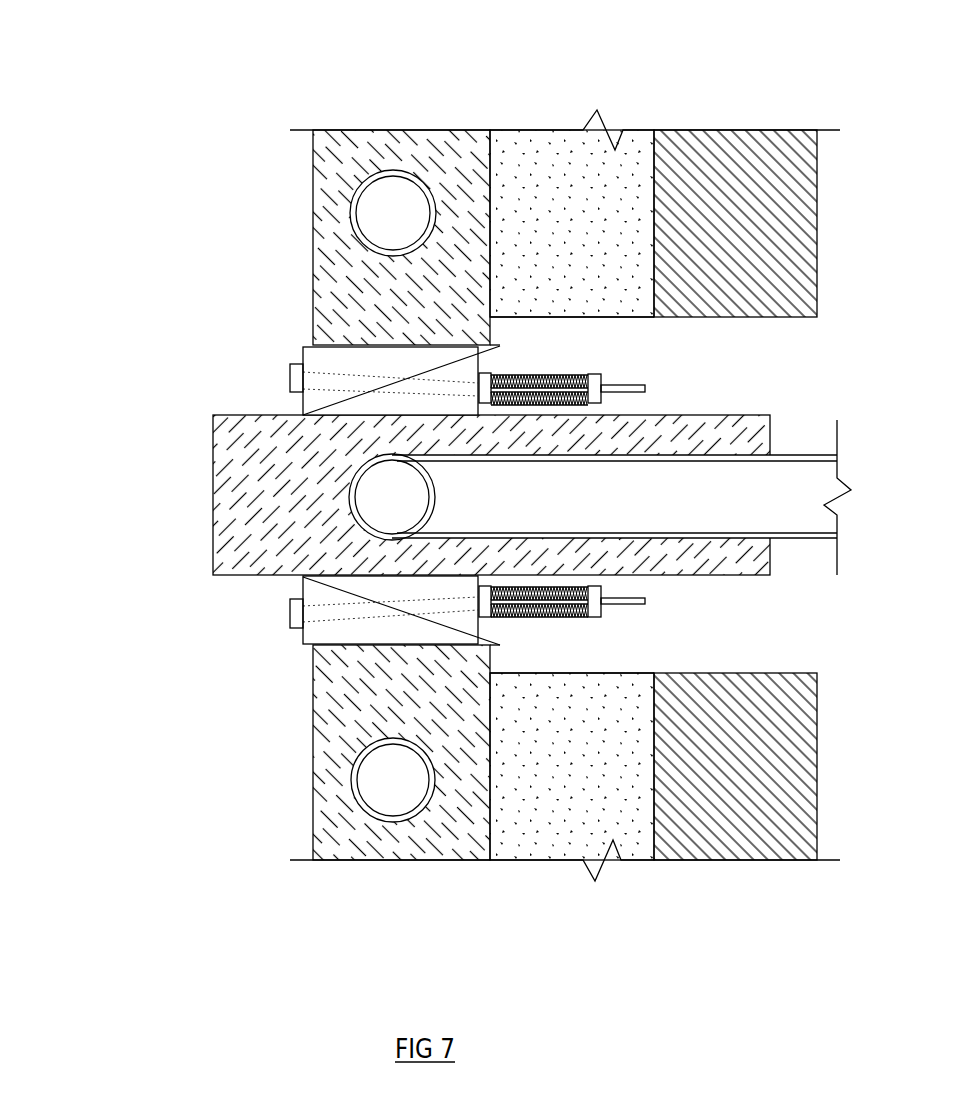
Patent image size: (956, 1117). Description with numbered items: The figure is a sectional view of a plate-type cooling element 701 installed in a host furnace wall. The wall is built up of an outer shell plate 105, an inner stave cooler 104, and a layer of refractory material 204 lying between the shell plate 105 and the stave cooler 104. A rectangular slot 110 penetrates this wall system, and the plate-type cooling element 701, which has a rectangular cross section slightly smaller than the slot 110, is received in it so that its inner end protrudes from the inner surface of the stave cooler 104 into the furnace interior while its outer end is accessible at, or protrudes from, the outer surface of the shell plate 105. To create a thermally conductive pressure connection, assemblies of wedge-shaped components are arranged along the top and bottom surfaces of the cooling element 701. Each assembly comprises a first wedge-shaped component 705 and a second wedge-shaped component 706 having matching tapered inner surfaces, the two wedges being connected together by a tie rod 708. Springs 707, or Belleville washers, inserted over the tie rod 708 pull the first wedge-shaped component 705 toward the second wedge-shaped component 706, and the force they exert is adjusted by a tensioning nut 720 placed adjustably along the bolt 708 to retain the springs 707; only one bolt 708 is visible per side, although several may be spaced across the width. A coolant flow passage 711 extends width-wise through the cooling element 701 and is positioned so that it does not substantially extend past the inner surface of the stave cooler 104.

The inner stave cooler 104 is at (382, 150).
The layer of refractory material 204 is at (548, 155).
The outer shell plate 105 is at (728, 145).
The rectangular slot 110 is at (128, 342).
The plate-type cooling element 701 is at (233, 512).
The coolant flow passage 711 is at (405, 512).
The first wedge-shaped component 705 is at (318, 357).
The second wedge-shaped component 706 is at (440, 375).
The springs 707 is at (565, 375).
The tie rod 708 is at (645, 389).
The tensioning nut 720 is at (600, 398).